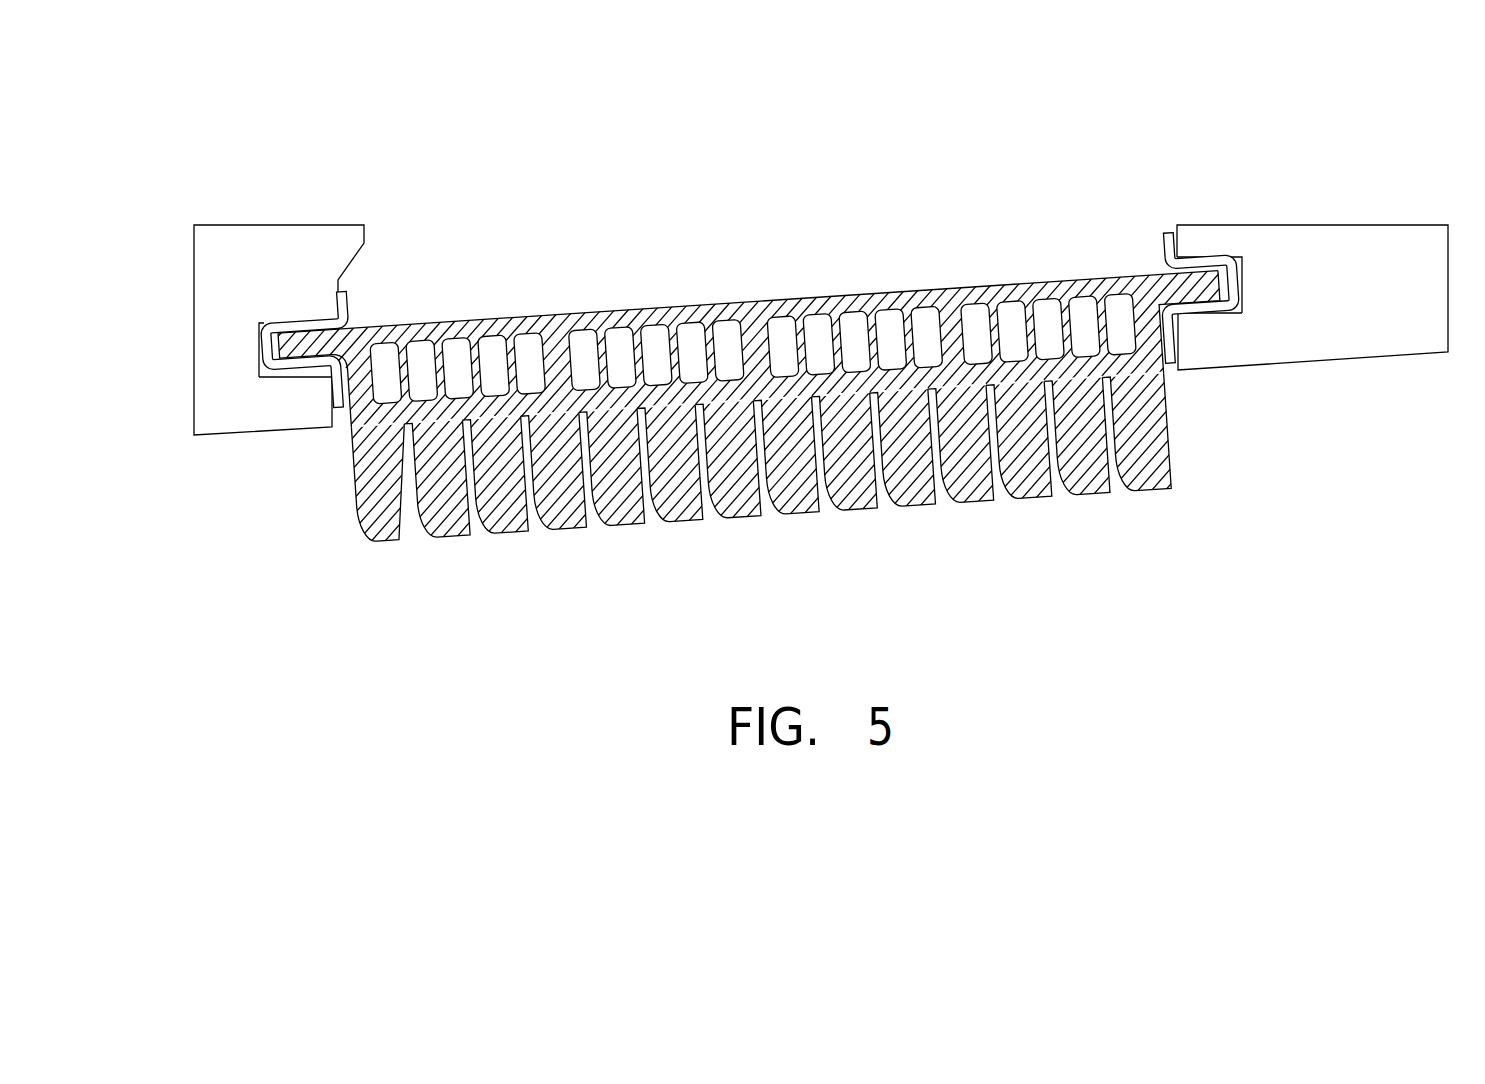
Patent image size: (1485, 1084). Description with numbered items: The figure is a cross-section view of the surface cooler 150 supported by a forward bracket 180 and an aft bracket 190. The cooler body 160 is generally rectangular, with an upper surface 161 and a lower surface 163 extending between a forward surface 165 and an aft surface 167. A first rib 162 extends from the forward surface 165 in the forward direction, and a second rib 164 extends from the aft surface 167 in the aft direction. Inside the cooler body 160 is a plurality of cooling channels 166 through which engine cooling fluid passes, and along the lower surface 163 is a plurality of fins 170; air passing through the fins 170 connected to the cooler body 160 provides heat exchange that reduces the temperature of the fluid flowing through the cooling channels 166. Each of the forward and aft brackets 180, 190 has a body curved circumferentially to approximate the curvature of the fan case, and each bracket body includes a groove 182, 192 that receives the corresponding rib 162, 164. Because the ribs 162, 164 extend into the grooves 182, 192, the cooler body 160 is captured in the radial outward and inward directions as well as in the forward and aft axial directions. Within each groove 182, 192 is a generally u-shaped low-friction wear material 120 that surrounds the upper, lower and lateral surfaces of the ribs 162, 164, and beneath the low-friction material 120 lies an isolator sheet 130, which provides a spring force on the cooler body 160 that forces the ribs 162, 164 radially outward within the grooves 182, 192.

The surface cooler 150 is at (384, 120).
The forward bracket 180 is at (271, 200).
The aft bracket 190 is at (1318, 386).
The low-friction wear material 120 is at (343, 305).
The groove 182 is at (284, 316).
The groove 192 is at (1240, 291).
The isolator sheet 130 is at (287, 380).
The cooler body 160 is at (517, 562).
The fins 170 is at (725, 549).
The upper surface 161 is at (947, 298).
The first rib 162 is at (305, 347).
The lower surface 163 is at (867, 493).
The second rib 164 is at (1183, 288).
The forward surface 165 is at (336, 420).
The cooling channels 166 is at (720, 325).
The aft surface 167 is at (1165, 368).